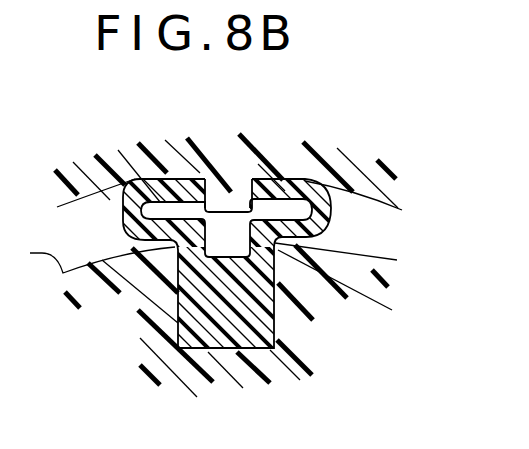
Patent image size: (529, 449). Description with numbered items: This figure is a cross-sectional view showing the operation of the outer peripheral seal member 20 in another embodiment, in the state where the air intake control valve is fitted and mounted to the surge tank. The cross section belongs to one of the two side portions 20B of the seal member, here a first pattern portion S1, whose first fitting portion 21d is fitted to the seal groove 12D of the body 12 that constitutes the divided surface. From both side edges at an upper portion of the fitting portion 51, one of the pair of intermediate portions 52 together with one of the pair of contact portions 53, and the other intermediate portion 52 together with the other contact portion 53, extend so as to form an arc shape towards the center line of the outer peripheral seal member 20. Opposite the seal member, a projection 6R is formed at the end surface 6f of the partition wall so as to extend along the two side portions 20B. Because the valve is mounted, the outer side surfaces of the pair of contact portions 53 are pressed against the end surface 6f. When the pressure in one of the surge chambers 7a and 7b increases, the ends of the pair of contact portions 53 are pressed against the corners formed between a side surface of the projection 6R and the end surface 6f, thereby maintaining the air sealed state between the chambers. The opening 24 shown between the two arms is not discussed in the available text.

The end surface 6f is at (92, 193).
The projection 6R is at (266, 182).
The contact portions 53 is at (163, 182).
The opening 24 is at (225, 244).
The first pattern portion S1 is at (348, 209).
The surge chamber 7a is at (112, 249).
The surge chamber 7b is at (385, 249).
The body 12 is at (336, 352).
The side portions 20B is at (245, 236).
The outer peripheral seal member 20 is at (245, 236).
The intermediate portions 52 is at (176, 248).
The fitting portion 51 is at (262, 350).
The seal groove 12D is at (198, 348).
The first fitting portion 21d is at (272, 348).